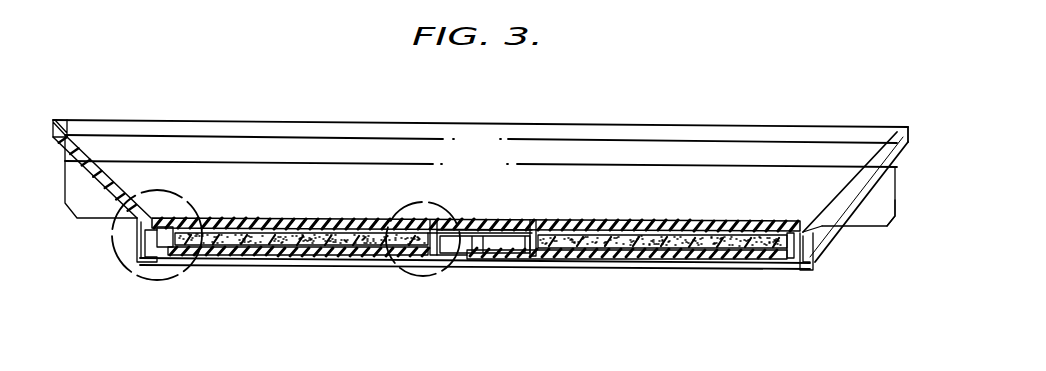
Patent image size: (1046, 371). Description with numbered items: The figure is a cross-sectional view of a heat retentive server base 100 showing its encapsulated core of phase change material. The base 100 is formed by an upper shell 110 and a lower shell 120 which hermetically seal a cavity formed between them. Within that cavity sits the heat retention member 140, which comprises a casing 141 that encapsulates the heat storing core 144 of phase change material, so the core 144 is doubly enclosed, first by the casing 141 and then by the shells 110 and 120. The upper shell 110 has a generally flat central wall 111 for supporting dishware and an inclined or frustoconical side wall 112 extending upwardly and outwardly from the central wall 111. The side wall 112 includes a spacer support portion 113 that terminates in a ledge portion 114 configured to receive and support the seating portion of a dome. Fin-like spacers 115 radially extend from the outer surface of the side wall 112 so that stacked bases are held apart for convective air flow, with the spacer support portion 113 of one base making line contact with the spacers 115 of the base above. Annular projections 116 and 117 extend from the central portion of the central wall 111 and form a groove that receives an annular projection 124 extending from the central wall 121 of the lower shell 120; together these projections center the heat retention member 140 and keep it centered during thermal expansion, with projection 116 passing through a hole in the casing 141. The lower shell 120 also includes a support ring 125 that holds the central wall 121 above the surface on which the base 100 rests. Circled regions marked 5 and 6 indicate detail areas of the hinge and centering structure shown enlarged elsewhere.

The detail view circle (FIG. 5) 5 is at (137, 276).
The detail view circle (FIG. 6) 6 is at (452, 272).
The base 100 is at (816, 262).
The upper shell 110 is at (890, 138).
The central wall 111 is at (580, 220).
The side wall 112 is at (873, 193).
The spacer support portion 113 is at (877, 162).
The ledge portion 114 is at (902, 127).
The fin-like spacers 115 is at (897, 204).
The annular projection 116 is at (424, 231).
The annular projection 117 is at (441, 232).
The lower shell 120 is at (307, 264).
The central wall 121 is at (557, 260).
The annular projection 124 is at (459, 253).
The support ring 125 is at (803, 272).
The heat retention member 140 is at (798, 270).
The casing 141 is at (687, 258).
The heat storing core 144 is at (635, 252).